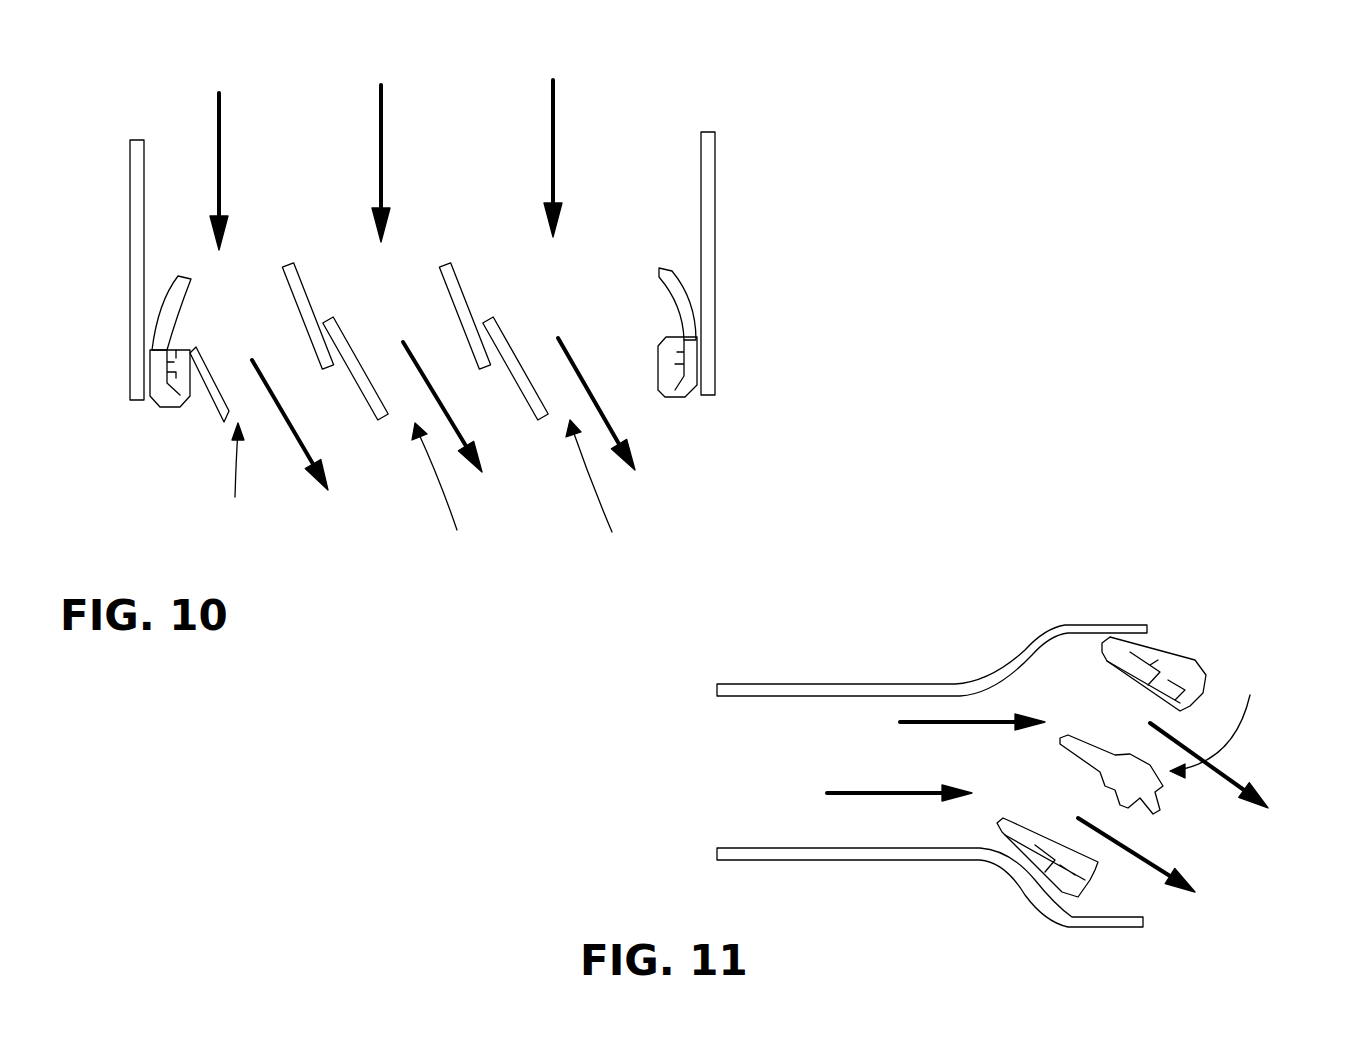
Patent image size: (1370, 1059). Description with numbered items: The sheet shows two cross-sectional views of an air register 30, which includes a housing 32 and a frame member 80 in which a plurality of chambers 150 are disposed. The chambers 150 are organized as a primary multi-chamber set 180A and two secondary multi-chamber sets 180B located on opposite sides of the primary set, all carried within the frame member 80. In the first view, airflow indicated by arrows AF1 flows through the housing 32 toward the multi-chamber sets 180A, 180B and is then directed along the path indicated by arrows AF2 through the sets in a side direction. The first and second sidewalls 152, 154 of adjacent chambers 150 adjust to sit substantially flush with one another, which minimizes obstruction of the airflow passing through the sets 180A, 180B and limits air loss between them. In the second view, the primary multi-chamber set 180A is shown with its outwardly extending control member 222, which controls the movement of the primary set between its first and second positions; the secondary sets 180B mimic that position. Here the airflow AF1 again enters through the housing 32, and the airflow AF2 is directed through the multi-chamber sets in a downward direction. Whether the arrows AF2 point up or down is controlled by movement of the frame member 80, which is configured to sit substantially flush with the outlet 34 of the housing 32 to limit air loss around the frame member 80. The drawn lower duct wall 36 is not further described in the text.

In FIG. 10, the air register 30 is at (768, 195).
In FIG. 11, the air register 30 is at (935, 617).
In FIG. 10, the housing 32 is at (715, 290).
In FIG. 11, the housing 32 is at (1057, 633).
In FIG. 10, the outlet 34 is at (136, 400).
In FIG. 11, the outlet 34 is at (1143, 922).
In FIG. 11, the lower duct wall 36 is at (715, 850).
In FIG. 10, the frame member 80 is at (690, 398).
In FIG. 11, the frame member 80 is at (1153, 647).
In FIG. 11, the chambers 150 is at (1188, 706).
In FIG. 10, the first sidewall 152 is at (218, 421).
In FIG. 10, the second sidewall 154 is at (327, 370).
In FIG. 10, the primary multi-chamber set 180A is at (455, 494).
In FIG. 11, the primary multi-chamber set 180A is at (1240, 724).
In FIG. 10, the secondary multi-chamber sets 180B is at (427, 492).
In FIG. 11, the control member 222 is at (1165, 790).
In FIG. 10, the airflow arrows AF1 is at (221, 133).
In FIG. 11, the airflow arrows AF1 is at (925, 724).
In FIG. 10, the airflow arrows AF2 is at (300, 430).
In FIG. 11, the airflow arrows AF2 is at (1228, 795).